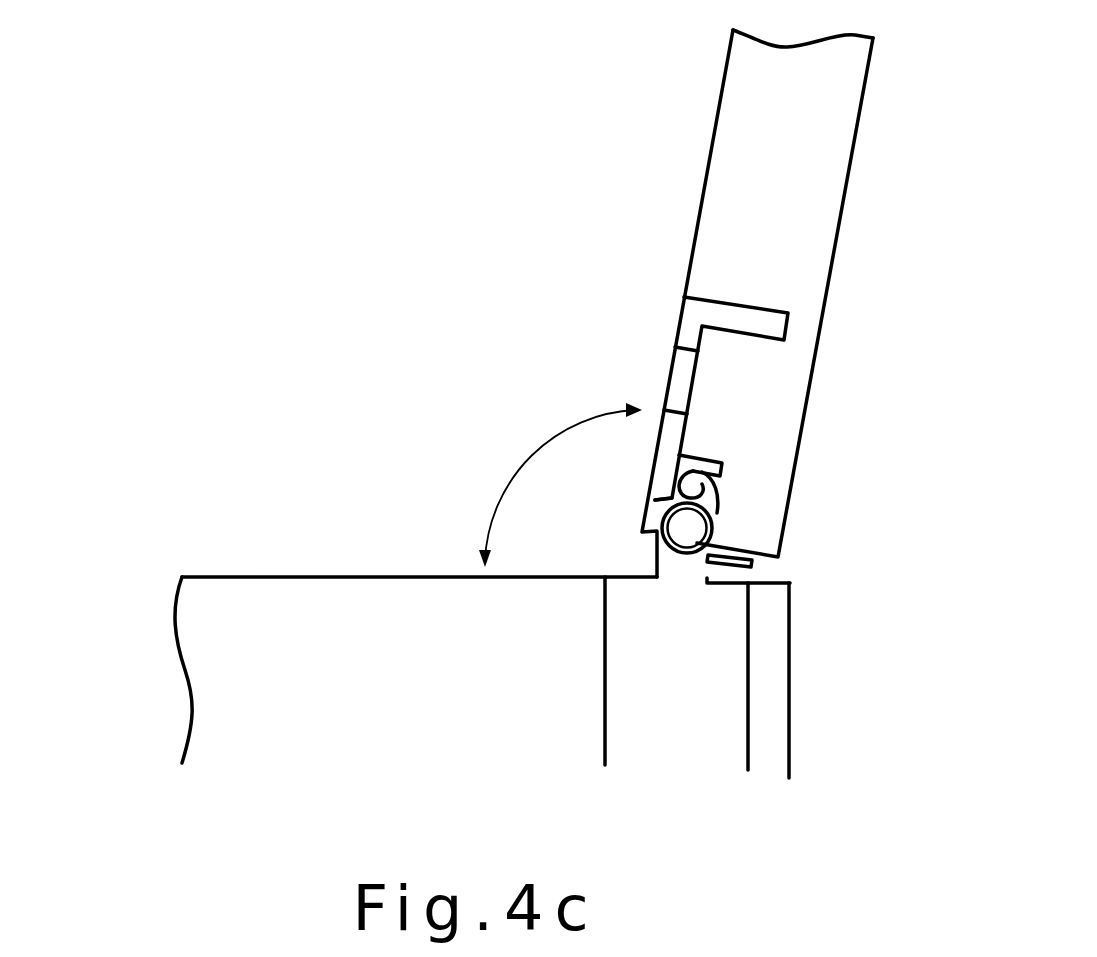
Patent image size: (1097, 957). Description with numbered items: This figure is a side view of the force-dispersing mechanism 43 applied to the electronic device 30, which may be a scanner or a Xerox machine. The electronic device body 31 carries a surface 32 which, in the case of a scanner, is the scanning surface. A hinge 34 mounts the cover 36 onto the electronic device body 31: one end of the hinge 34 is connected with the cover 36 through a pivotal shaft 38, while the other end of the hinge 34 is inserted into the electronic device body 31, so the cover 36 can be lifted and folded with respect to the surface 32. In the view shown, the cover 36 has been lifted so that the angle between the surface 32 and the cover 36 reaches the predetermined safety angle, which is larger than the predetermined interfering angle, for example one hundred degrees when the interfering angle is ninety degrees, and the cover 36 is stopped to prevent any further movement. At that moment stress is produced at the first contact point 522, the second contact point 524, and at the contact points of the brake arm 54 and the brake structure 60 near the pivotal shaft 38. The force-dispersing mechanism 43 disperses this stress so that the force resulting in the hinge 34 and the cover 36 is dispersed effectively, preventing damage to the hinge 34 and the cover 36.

The electronic device 30 is at (266, 361).
The electronic device body 31 is at (283, 683).
The surface 32 is at (220, 573).
The hinge 34 is at (700, 683).
The cover 36 is at (832, 203).
The pivotal shaft 38 is at (690, 538).
The force-dispersing mechanism 43 is at (802, 568).
The brake arm 54 is at (652, 470).
The brake structure 60 is at (658, 496).
The first contact point 522 is at (733, 550).
The second contact point 524 is at (713, 530).